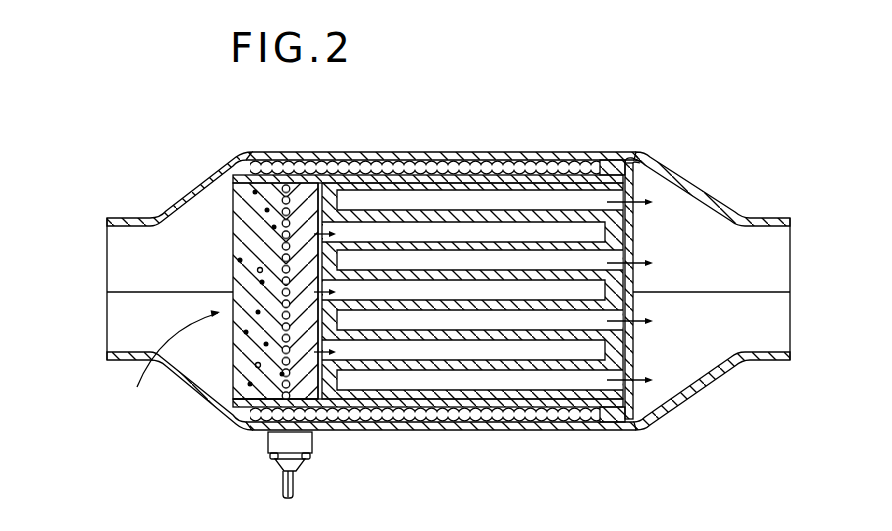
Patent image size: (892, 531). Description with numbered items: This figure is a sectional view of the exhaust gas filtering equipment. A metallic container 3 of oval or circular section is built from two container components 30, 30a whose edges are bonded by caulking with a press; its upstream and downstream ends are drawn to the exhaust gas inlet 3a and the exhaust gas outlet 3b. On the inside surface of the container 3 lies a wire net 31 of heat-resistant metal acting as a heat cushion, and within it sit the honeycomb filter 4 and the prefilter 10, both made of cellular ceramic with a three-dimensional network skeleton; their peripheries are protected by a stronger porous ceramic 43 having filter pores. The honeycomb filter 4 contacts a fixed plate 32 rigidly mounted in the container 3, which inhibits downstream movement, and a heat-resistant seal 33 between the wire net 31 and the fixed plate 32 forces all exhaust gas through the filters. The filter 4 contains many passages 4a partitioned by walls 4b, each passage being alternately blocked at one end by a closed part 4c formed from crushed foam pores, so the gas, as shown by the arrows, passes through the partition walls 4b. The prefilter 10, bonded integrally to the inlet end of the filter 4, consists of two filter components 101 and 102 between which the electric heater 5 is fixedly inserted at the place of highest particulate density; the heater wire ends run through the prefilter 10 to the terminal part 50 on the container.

The metallic container 3 is at (506, 196).
The exhaust gas inlet 3a is at (178, 276).
The exhaust gas outlet 3b is at (773, 276).
The honeycomb filter 4 is at (473, 388).
The passages 4a is at (593, 297).
The partition walls 4b is at (590, 256).
The closed part 4c is at (615, 348).
The electric heater 5 is at (298, 222).
The prefilter 10 is at (148, 364).
The container component 30 is at (180, 204).
The container component 30a is at (160, 377).
The wire net 31 is at (460, 152).
The fixed plate 32 is at (645, 183).
The heat-resistant seal 33 is at (630, 162).
The porous ceramic 43 is at (556, 176).
The terminal part 50 is at (268, 442).
The filter component 101 is at (227, 395).
The filter component 102 is at (322, 392).